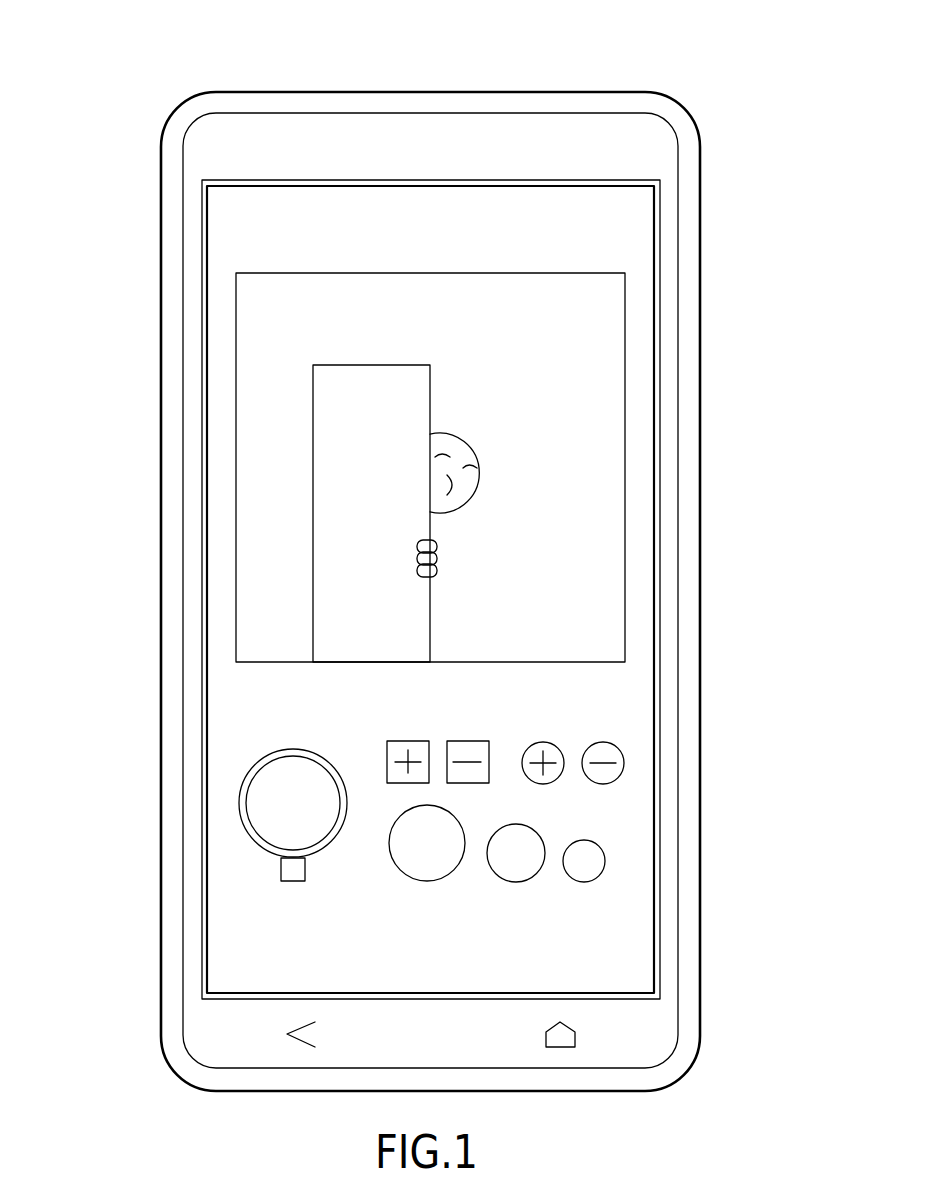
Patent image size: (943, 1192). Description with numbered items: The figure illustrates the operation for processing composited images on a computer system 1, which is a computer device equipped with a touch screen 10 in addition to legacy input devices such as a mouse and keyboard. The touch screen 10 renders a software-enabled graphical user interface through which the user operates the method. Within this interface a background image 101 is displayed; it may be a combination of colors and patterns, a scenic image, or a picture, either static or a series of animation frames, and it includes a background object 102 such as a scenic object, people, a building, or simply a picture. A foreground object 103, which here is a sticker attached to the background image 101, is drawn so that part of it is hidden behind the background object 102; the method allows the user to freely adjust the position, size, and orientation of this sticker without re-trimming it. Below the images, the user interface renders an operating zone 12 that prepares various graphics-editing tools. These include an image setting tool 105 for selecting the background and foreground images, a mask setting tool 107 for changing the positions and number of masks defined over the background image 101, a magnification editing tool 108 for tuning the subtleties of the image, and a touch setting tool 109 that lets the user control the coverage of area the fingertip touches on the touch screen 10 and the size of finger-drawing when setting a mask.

The computer system 1 is at (115, 27).
The touch screen 10 is at (433, 555).
The background image 101 is at (429, 349).
The background object 102 is at (375, 349).
The foreground object 103 is at (605, 473).
The image setting tool 105 is at (488, 740).
The mask setting tool 107 is at (522, 740).
The magnification editing tool 108 is at (218, 815).
The touch setting tool 109 is at (388, 880).
The operating zone 12 is at (637, 741).